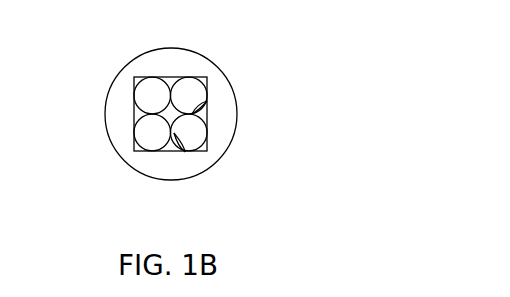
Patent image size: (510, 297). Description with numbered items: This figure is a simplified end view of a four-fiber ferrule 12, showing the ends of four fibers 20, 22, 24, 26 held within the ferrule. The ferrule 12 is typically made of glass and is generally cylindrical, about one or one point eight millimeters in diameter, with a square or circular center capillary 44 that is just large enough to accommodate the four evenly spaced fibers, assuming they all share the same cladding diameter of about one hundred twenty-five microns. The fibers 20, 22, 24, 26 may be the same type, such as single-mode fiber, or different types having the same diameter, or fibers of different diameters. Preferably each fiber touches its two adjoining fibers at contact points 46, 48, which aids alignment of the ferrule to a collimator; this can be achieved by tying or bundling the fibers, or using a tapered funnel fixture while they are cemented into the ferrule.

The four-fiber ferrule 12 is at (205, 55).
The center capillary 44 is at (174, 79).
The fiber 22 is at (145, 86).
The fiber 20 is at (200, 87).
The fiber 26 is at (145, 140).
The fiber 24 is at (200, 142).
The contact point 48 is at (207, 101).
The contact point 46 is at (185, 152).